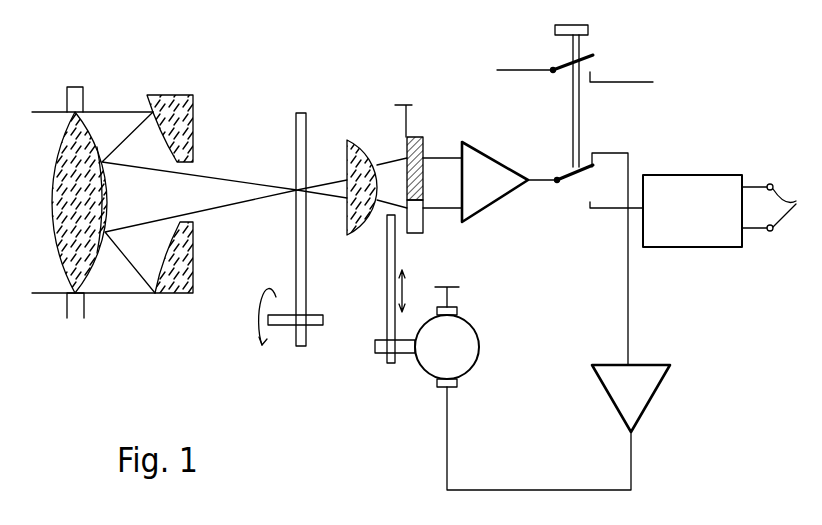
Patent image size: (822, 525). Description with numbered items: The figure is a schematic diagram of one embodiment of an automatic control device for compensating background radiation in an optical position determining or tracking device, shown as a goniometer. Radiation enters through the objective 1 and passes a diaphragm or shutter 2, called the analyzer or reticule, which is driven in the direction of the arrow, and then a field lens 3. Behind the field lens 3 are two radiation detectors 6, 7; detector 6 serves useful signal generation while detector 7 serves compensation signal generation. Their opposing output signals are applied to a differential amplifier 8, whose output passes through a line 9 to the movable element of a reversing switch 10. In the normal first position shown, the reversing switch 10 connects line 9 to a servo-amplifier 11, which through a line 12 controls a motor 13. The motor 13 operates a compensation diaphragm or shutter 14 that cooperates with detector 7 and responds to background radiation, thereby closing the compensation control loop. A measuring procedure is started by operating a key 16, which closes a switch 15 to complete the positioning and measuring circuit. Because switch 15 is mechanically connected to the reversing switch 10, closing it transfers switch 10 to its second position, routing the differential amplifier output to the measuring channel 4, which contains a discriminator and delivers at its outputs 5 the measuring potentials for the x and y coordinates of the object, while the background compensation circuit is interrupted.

The objective 1 is at (107, 339).
The diaphragm or shutter 2 is at (296, 246).
The field lens 3 is at (363, 139).
The measuring channel 4 is at (695, 173).
The outputs 5 is at (776, 207).
The radiation detector 6 is at (425, 152).
The radiation detector 7 is at (425, 223).
The differential amplifier 8 is at (490, 153).
The line 9 is at (543, 183).
The reversing switch 10 is at (557, 176).
The servo-amplifier 11 is at (655, 392).
The line 12 is at (515, 490).
The motor 13 is at (480, 352).
The compensation diaphragm or shutter 14 is at (387, 272).
The switch 15 is at (557, 65).
The key 16 is at (590, 29).